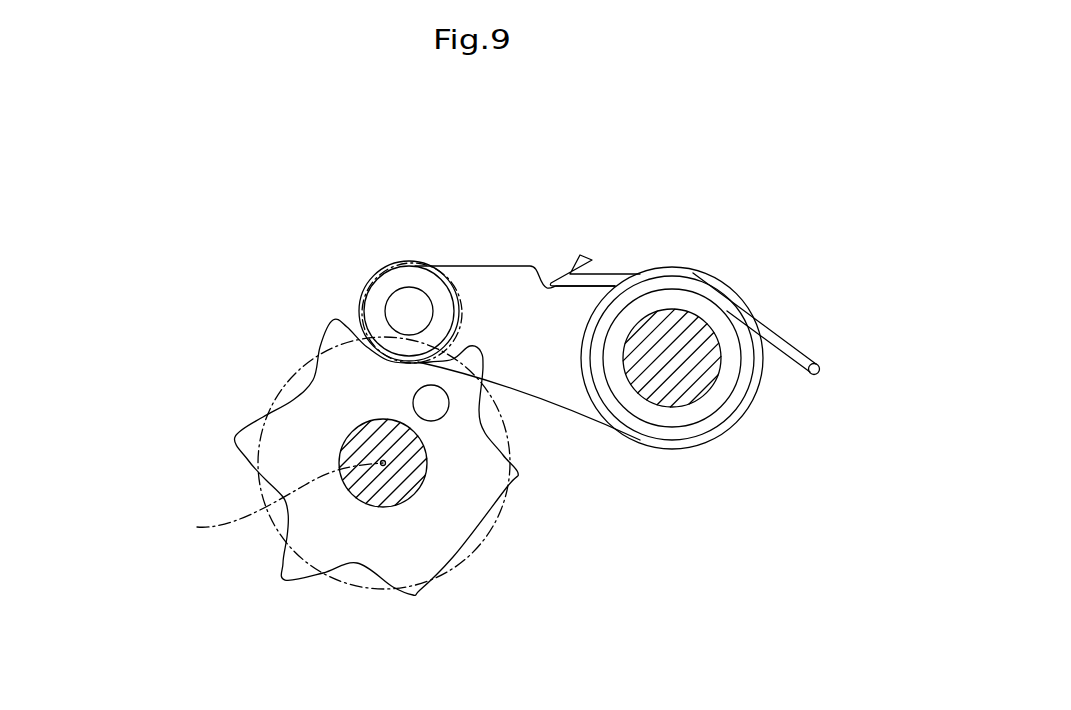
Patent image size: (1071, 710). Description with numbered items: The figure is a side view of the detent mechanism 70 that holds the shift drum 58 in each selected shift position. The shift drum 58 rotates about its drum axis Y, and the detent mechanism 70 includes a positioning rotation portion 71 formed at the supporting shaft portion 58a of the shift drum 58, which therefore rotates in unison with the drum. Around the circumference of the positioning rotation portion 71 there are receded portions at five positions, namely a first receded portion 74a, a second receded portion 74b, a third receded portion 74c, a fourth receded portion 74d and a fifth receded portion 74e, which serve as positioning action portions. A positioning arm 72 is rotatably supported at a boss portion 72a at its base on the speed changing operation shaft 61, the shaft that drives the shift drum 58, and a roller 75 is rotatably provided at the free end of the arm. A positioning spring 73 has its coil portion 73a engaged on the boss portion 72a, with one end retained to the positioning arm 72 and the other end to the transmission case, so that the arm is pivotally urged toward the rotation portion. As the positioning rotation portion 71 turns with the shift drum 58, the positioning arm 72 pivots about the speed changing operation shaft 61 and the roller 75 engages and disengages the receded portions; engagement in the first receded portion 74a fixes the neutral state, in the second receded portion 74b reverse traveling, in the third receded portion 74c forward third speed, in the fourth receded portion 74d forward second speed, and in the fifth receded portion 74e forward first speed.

The detent mechanism 70 is at (202, 199).
The positioning rotation portion 71 is at (450, 483).
The shift drum 58 is at (290, 400).
The supporting shaft portion 58a is at (363, 443).
The drum axis Y is at (277, 502).
The first receded portion 74a is at (400, 333).
The second receded portion 74b is at (477, 427).
The third receded portion 74c is at (294, 392).
The fourth receded portion 74d is at (282, 483).
The fifth receded portion 74e is at (357, 563).
The positioning arm 72 is at (499, 280).
The boss portion 72a is at (673, 417).
The roller 75 is at (413, 262).
The positioning spring 73 is at (699, 275).
The coil portion 73a is at (740, 392).
The speed changing operation shaft 61 is at (683, 380).